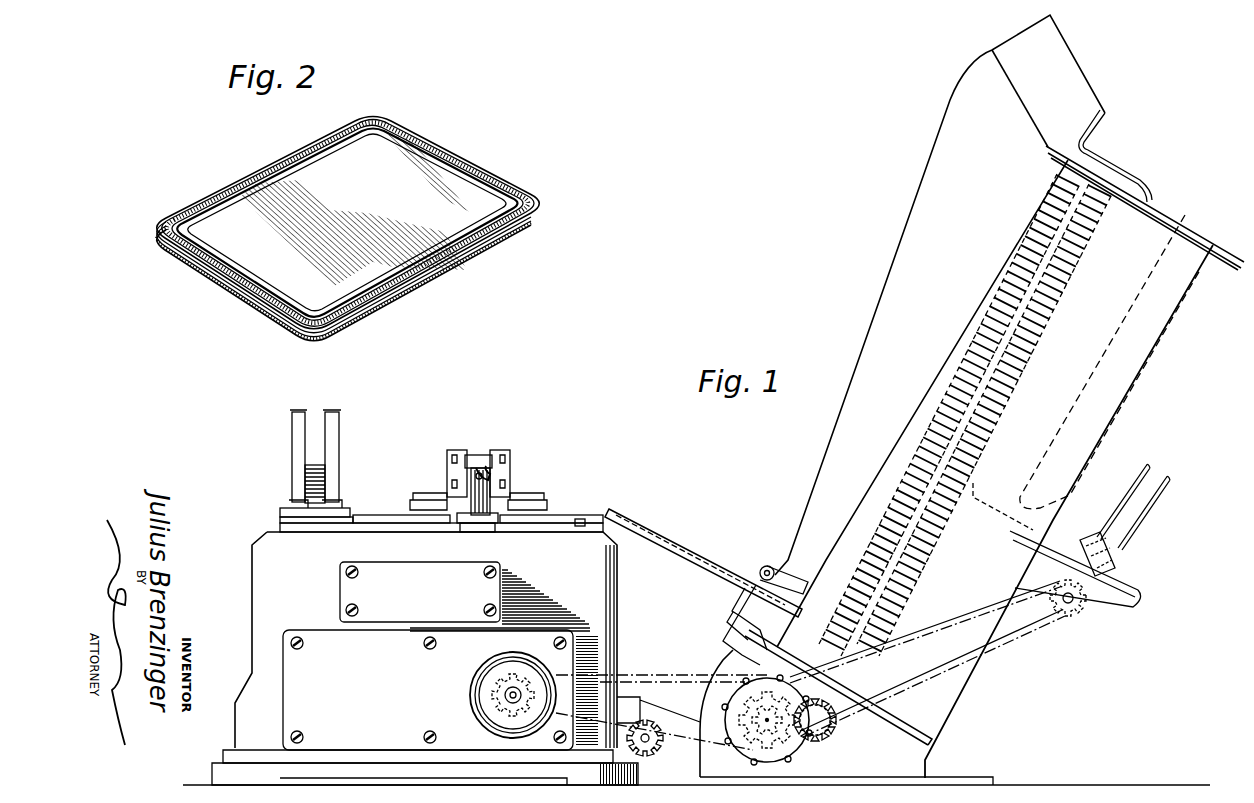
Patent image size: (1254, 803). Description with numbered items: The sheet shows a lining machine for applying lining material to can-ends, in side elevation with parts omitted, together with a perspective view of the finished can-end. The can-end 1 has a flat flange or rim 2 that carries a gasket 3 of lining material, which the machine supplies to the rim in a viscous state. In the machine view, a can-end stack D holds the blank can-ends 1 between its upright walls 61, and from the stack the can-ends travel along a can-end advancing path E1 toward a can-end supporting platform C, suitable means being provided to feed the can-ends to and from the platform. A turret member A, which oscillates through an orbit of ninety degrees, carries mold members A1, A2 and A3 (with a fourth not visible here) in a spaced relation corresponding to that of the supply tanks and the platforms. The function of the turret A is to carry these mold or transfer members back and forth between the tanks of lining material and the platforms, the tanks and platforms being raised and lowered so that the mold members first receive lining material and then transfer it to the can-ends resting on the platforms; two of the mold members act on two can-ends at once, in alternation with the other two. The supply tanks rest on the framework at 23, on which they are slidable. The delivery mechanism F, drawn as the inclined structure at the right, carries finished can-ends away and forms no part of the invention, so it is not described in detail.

In FIG. 2, the can-end 1 is at (455, 165).
In FIG. 1, the can-end 1 is at (317, 461).
In FIG. 2, the flat flange or rim 2 is at (538, 182).
In FIG. 2, the gasket of lining material 3 is at (493, 168).
In FIG. 1, the gasket of lining material 3 is at (467, 395).
In FIG. 1, the can-end stack D is at (316, 447).
In FIG. 1, the upright walls 61 is at (339, 425).
In FIG. 1, the can-end advancing path E1 is at (380, 514).
In FIG. 1, the turret member A is at (502, 463).
In FIG. 1, the mold member A1 is at (424, 492).
In FIG. 1, the mold member A2 is at (490, 477).
In FIG. 1, the mold member A3 is at (533, 492).
In FIG. 1, the can-end supporting platform C is at (477, 524).
In FIG. 1, the framework 23 is at (552, 533).
In FIG. 1, the delivery mechanism F is at (720, 556).